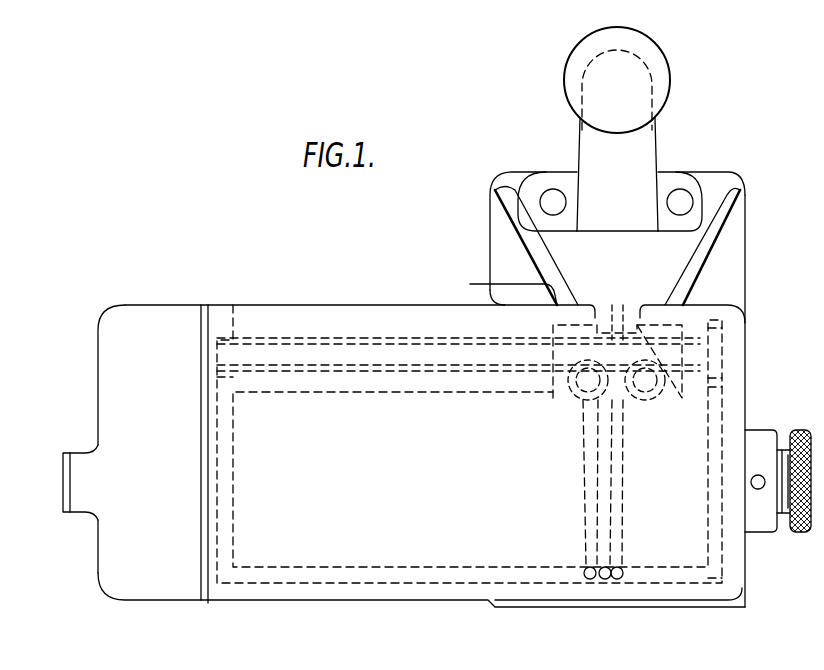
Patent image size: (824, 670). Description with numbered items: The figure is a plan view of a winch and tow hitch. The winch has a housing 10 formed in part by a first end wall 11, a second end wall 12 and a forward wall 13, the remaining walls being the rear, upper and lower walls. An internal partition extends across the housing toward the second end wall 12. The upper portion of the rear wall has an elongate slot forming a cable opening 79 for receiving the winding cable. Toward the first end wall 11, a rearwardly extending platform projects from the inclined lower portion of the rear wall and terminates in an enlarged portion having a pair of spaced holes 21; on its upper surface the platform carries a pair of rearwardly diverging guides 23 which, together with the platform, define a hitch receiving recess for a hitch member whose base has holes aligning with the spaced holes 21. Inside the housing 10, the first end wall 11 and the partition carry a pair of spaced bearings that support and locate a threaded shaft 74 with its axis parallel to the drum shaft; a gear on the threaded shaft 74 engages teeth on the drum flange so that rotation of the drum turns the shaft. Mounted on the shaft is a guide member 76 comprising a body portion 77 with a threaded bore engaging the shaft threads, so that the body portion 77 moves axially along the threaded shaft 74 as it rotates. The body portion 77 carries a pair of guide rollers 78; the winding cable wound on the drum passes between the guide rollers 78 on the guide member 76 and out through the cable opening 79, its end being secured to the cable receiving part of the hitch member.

The housing 10 is at (682, 455).
The first end wall 11 is at (746, 368).
The second end wall 12 is at (98, 418).
The forward wall 13 is at (417, 583).
The spaced holes 21 is at (686, 190).
The rearwardly diverging guides 23 is at (615, 166).
The threaded shaft 74 is at (480, 360).
The guide member 76 is at (666, 328).
The body portion 77 is at (678, 333).
The guide rollers 78 is at (611, 398).
The cable opening 79 is at (401, 298).